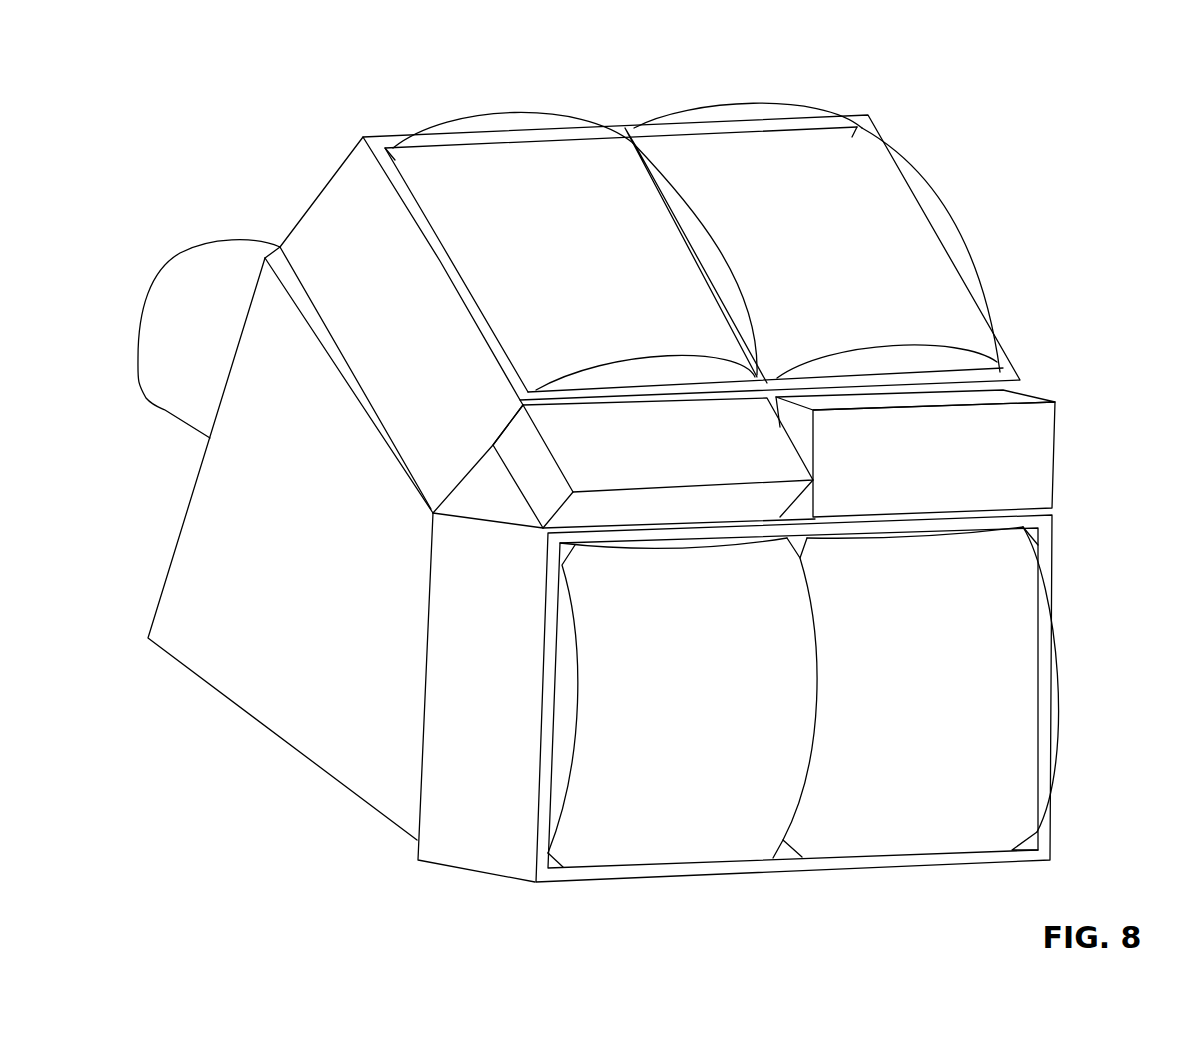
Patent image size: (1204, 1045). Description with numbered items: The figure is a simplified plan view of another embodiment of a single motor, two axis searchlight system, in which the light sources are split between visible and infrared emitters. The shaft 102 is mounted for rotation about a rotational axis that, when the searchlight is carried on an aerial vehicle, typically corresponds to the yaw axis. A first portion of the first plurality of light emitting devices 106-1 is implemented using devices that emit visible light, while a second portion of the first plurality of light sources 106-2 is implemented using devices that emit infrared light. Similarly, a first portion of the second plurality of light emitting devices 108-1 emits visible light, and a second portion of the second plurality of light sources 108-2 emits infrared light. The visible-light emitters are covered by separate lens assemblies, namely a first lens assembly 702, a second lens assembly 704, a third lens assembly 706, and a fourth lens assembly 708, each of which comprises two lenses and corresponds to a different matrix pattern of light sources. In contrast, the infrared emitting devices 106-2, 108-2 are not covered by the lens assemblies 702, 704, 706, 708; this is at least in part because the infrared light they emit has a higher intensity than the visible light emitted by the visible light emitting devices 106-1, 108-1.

The shaft 102 is at (187, 283).
The first portion of the first plurality of light emitting devices 106-1 is at (738, 213).
The second portion of the first plurality of light sources 106-2 is at (532, 468).
The first portion of the second plurality of light emitting devices 108-1 is at (870, 728).
The second portion of the second plurality of light sources 108-2 is at (1054, 455).
The first lens assembly 702 is at (750, 101).
The second lens assembly 704 is at (510, 114).
The third lens assembly 706 is at (1072, 513).
The fourth lens assembly 708 is at (633, 866).